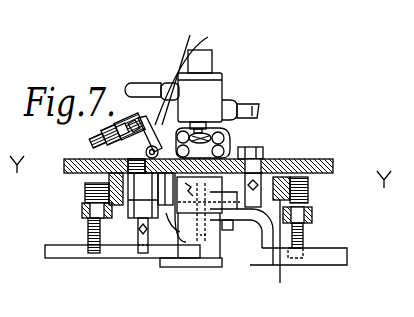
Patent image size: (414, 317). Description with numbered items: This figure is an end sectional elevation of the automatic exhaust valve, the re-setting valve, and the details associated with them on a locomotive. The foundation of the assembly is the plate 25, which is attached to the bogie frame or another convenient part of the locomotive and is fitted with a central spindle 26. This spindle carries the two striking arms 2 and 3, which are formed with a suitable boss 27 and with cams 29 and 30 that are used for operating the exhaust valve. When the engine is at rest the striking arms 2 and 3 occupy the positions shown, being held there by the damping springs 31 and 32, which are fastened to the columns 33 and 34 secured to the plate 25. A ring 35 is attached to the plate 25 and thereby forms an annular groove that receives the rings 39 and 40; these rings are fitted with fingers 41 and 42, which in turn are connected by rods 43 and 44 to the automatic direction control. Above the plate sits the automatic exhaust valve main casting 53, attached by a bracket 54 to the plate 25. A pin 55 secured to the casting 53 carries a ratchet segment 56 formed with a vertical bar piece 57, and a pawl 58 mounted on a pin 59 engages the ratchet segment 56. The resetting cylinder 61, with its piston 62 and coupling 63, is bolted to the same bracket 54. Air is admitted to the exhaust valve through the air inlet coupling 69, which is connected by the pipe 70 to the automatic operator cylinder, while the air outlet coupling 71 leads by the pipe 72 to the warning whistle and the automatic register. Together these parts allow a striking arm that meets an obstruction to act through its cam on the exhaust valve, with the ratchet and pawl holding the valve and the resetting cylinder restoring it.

The striking arm 2 is at (80, 259).
The striking arm 3 is at (352, 255).
The plate 25 is at (75, 172).
The central spindle 26 is at (208, 266).
The boss 27 is at (173, 223).
The cam 29 is at (227, 233).
The cam 30 is at (233, 212).
The damping spring 31 is at (143, 243).
The damping spring 32 is at (271, 195).
The column 33 is at (135, 215).
The column 34 is at (260, 148).
The ring 35 is at (285, 250).
The ring 39 is at (87, 192).
The ring 40 is at (308, 189).
The finger 41 is at (88, 235).
The finger 42 is at (305, 232).
The rod 43 is at (82, 210).
The rod 44 is at (312, 208).
The automatic exhaust valve main casting 53 is at (212, 83).
The bracket 54 is at (143, 125).
The pin 55 is at (227, 138).
The ratchet segment 56 is at (188, 183).
The vertical bar piece 57 is at (205, 243).
The pawl 58 is at (152, 125).
The pin 59 is at (183, 71).
The resetting cylinder 61 is at (115, 137).
The piston 62 is at (130, 123).
The coupling 63 is at (97, 143).
The air inlet coupling 69 is at (192, 73).
The pipe 70 is at (130, 87).
The air outlet coupling 71 is at (228, 105).
The pipe 72 is at (241, 108).